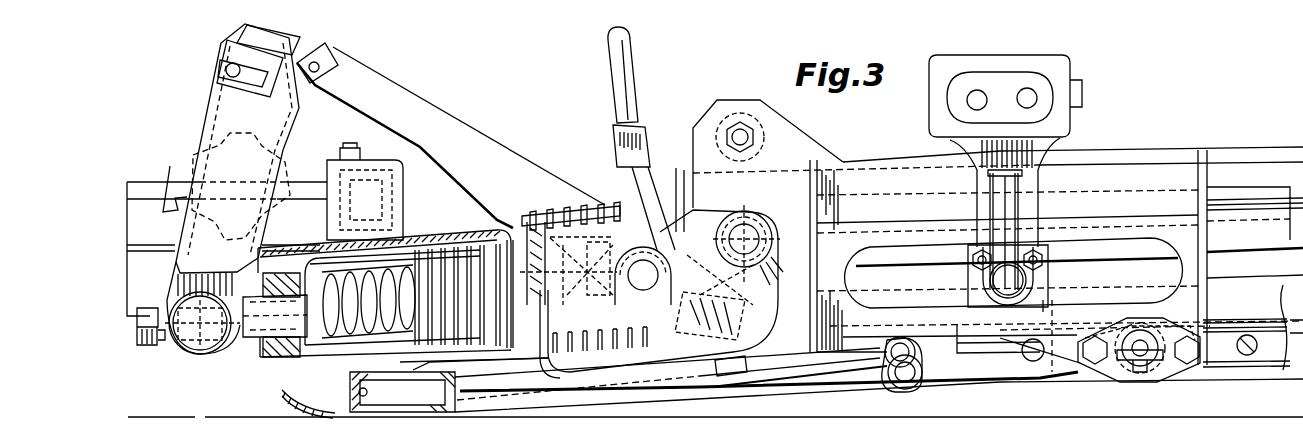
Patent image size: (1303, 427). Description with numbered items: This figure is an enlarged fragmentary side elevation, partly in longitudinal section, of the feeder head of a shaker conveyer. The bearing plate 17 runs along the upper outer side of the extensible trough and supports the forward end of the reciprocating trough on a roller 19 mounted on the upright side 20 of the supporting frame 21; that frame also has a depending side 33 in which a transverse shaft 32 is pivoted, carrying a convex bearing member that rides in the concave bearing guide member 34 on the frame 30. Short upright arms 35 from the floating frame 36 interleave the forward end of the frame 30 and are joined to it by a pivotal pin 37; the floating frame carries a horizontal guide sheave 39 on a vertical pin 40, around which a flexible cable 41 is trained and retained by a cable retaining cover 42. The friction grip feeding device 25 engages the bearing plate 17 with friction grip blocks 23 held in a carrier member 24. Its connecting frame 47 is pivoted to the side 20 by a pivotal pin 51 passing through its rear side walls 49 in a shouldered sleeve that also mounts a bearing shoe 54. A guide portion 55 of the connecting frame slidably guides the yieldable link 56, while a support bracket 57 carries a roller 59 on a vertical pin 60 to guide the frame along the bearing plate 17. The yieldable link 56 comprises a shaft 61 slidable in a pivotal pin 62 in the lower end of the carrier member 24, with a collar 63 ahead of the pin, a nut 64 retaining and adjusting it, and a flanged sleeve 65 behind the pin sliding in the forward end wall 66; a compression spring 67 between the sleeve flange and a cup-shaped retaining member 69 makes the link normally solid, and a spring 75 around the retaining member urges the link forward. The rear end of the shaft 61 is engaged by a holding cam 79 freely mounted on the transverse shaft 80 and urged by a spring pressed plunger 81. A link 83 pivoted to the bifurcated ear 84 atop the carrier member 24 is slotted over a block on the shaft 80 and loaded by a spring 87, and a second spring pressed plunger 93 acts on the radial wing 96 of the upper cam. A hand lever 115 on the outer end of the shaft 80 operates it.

The bearing plate 17 is at (138, 181).
The roller 19 is at (768, 130).
The upright side 20 is at (742, 99).
The supporting frame 21 is at (858, 165).
The friction grip block 23 is at (166, 195).
The carrier member 24 is at (206, 120).
The friction grip feeding device 25 is at (283, 31).
The frame 30 is at (1253, 370).
The transverse shaft 32 is at (1133, 360).
The depending side 33 is at (1068, 353).
The bearing guide member 34 is at (1215, 352).
The upright arm 35 is at (882, 385).
The floating frame 36 is at (648, 392).
The pivotal pin 37 is at (925, 385).
The guide sheave 39 is at (472, 413).
The vertical pin 40 is at (410, 362).
The flexible cable 41 is at (350, 388).
The cable retaining cover 42 is at (470, 380).
The connecting frame 47 is at (723, 387).
The rear side wall 49 is at (758, 372).
The pivotal pin 51 is at (744, 224).
The bearing shoe 54 is at (678, 165).
The guide portion 55 is at (471, 238).
The yieldable link 56 is at (253, 348).
The support bracket 57 is at (406, 211).
The roller 59 is at (323, 170).
The vertical pin 60 is at (367, 180).
The shaft 61 is at (497, 220).
The pivotal pin 62 is at (195, 348).
The collar 63 is at (163, 352).
The nut 64 is at (147, 306).
The flanged sleeve 65 is at (281, 392).
The forward end wall 66 is at (293, 360).
The compression spring 67 is at (318, 358).
The cup-shaped retaining member 69 is at (352, 360).
The spring 75 is at (479, 346).
The holding cam 79 is at (600, 328).
The transverse shaft 80 is at (648, 270).
The spring pressed plunger 81 is at (583, 362).
The link 83 is at (474, 127).
The bifurcated ear 84 is at (350, 56).
The spring 87 is at (686, 388).
The spring pressed plunger 93 is at (548, 205).
The radial wing 96 is at (657, 165).
The hand lever 115 is at (609, 44).